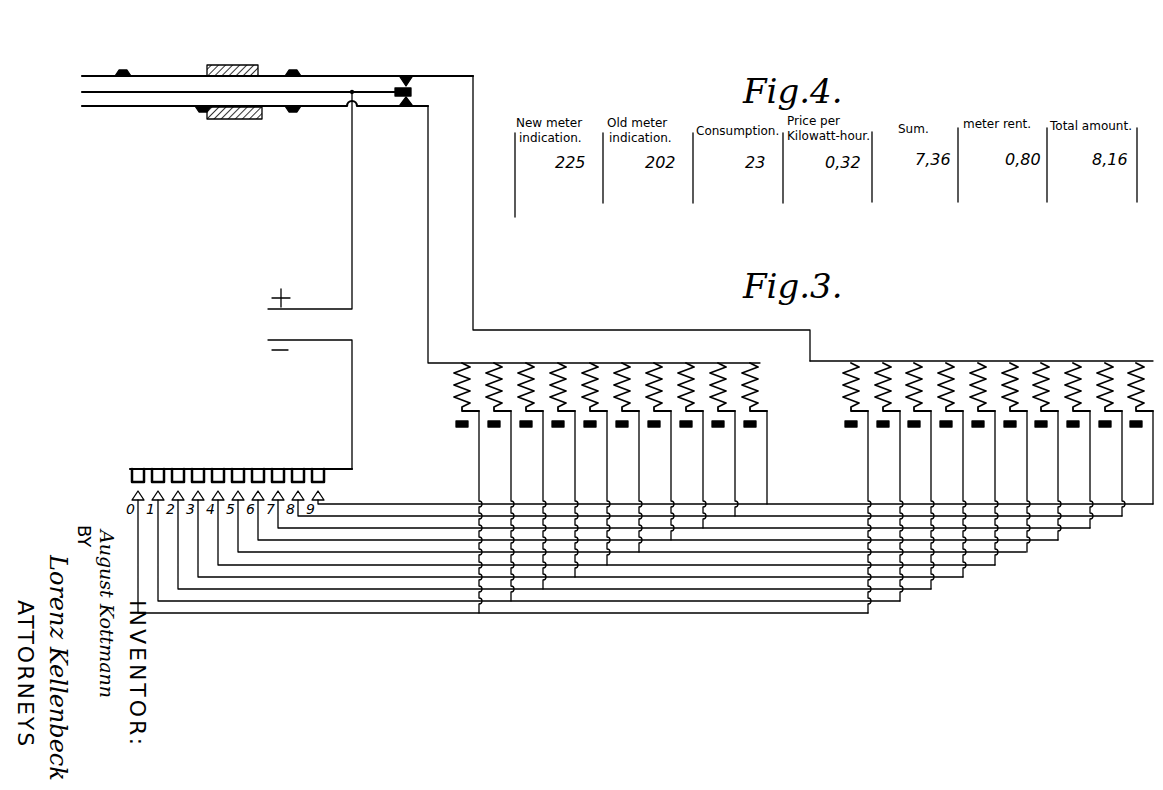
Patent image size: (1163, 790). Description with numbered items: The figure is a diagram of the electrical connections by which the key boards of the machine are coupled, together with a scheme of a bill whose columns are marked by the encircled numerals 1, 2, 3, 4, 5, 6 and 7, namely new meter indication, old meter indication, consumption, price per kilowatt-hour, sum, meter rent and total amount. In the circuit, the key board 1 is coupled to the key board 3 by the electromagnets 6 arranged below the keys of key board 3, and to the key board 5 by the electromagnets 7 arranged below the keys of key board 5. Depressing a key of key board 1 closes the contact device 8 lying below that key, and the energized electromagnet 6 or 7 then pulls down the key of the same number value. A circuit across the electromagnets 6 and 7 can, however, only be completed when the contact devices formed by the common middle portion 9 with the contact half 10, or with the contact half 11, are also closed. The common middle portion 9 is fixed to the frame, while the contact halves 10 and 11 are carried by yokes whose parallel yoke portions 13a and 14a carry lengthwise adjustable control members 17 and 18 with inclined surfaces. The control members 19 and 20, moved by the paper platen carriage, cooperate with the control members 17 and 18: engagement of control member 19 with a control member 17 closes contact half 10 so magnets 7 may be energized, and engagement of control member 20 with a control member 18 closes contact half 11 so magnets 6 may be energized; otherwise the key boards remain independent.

In FIG. 4, the key board 1 is at (603, 176).
In FIG. 4, the old meter indication column 2 is at (693, 176).
In FIG. 4, the key board 3 is at (783, 176).
In FIG. 4, the price per kilowatt-hour column 4 is at (872, 175).
In FIG. 4, the key board 5 is at (958, 173).
In FIG. 4, the electromagnets 6 is at (1047, 173).
In FIG. 3, the electromagnets 6 is at (610, 396).
In FIG. 4, the electromagnets 7 is at (1137, 173).
In FIG. 3, the electromagnets 7 is at (998, 394).
In FIG. 3, the contact device 8 is at (133, 491).
In FIG. 3, the common middle portion 9 is at (413, 91).
In FIG. 3, the contact half 10 is at (407, 77).
In FIG. 3, the contact half 11 is at (405, 104).
In FIG. 3, the yoke portion 13a is at (352, 75).
In FIG. 3, the yoke portion 14a is at (138, 108).
In FIG. 3, the control members 17 is at (124, 72).
In FIG. 3, the control members 18 is at (202, 112).
In FIG. 3, the control member 19 is at (242, 66).
In FIG. 3, the control member 20 is at (245, 119).